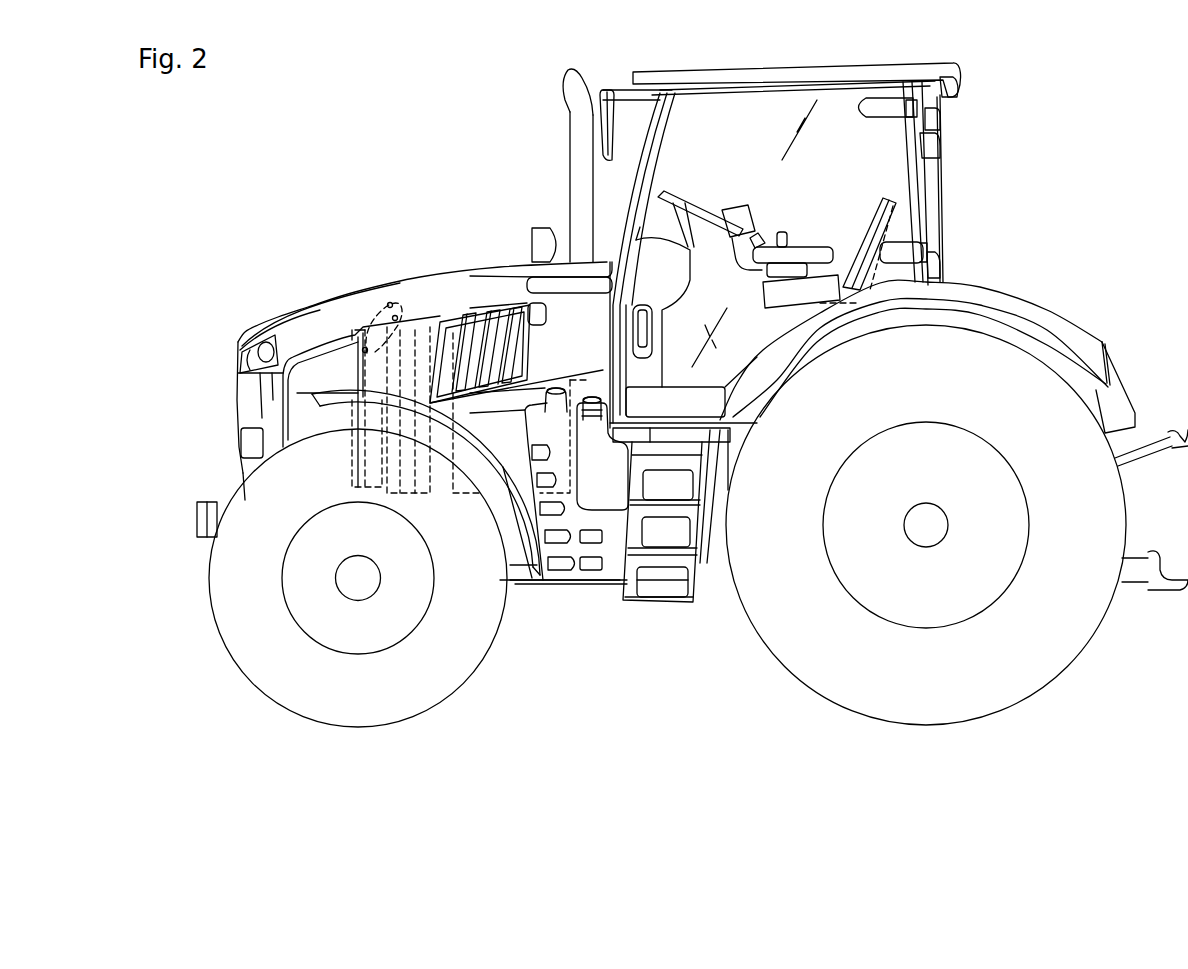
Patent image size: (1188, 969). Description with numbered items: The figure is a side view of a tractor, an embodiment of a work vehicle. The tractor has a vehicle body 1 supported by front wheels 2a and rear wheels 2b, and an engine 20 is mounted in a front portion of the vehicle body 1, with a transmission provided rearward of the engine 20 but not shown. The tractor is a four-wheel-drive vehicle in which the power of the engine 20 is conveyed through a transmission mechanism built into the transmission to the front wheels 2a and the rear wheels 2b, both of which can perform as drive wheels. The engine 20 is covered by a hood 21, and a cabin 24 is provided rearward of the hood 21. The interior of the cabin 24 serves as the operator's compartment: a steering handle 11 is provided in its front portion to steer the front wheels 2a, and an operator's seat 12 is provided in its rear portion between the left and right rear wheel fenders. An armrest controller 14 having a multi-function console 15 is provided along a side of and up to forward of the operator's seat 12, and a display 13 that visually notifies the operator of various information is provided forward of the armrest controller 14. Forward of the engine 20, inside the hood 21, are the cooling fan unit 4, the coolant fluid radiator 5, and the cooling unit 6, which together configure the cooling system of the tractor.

The vehicle body 1 is at (192, 530).
The front wheels 2a is at (219, 626).
The rear wheels 2b is at (778, 649).
The cooling fan unit 4 is at (422, 492).
The coolant fluid radiator 5 is at (408, 315).
The cooling unit 6 is at (350, 453).
The steering handle 11 is at (676, 204).
The operator's seat 12 is at (880, 200).
The display 13 is at (738, 216).
The armrest controller 14 is at (813, 241).
The multi-function console 15 is at (758, 238).
The engine 20 is at (572, 383).
The hood 21 is at (472, 268).
The cabin 24 is at (636, 195).